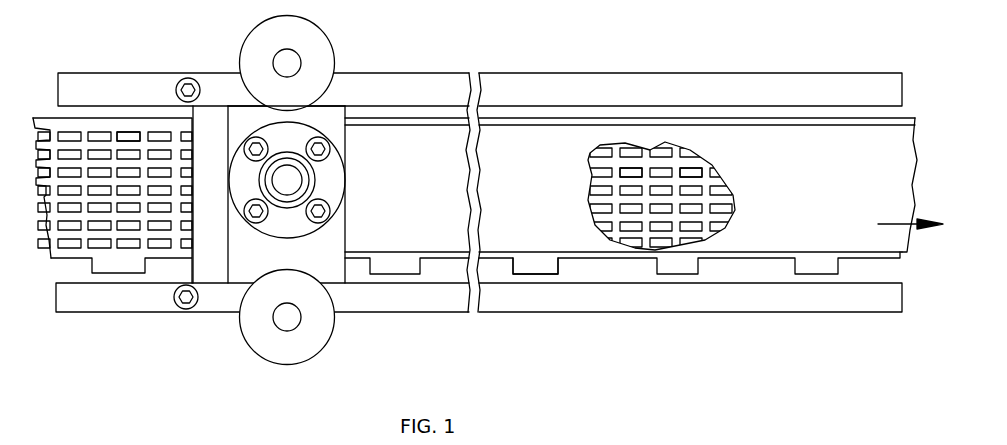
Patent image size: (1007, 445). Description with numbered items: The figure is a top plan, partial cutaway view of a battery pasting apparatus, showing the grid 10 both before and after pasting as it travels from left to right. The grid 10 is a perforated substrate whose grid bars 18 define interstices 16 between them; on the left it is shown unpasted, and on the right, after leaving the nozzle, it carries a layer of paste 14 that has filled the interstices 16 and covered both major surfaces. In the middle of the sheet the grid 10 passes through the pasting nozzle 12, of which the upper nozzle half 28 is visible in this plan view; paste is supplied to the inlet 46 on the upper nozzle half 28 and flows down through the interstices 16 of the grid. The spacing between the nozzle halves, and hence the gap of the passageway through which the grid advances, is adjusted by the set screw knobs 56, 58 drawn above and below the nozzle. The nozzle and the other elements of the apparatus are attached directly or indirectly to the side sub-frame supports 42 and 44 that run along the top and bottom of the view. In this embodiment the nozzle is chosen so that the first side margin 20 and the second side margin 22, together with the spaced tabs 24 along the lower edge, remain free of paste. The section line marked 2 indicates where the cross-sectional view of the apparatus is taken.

The grid 10 is at (46, 113).
The pasting nozzle 12 is at (320, 245).
The layer of paste 14 is at (432, 235).
The interstices 16 is at (132, 133).
The grid bars 18 is at (112, 135).
The first side margin 20 is at (386, 122).
The second side margin 22 is at (592, 255).
The spaced tabs 24 is at (520, 265).
The upper nozzle half 28 is at (312, 194).
The side sub-frame support 42 is at (552, 90).
The side sub-frame support 44 is at (112, 300).
The inlet 46 is at (312, 170).
The set screw knob 56 is at (302, 38).
The set screw knob 58 is at (318, 330).
The section line 2- 2 is at (62, 182).